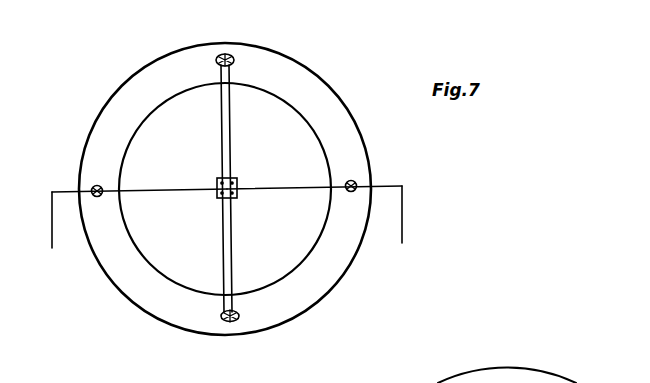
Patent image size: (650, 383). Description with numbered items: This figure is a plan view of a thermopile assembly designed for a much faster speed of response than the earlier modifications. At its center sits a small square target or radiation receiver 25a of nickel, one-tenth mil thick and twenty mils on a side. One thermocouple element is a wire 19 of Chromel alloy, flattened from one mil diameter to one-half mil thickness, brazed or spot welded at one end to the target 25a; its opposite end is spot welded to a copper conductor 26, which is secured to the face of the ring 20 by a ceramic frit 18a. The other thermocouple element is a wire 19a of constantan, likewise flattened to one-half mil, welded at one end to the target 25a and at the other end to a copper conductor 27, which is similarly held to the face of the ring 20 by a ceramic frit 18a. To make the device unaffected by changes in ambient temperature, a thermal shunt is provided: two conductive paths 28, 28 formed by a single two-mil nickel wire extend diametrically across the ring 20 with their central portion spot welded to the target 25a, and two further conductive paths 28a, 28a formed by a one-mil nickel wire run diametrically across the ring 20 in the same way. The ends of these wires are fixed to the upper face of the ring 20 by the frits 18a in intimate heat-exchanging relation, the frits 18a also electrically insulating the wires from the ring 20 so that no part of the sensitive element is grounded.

The ceramic frit 18a is at (233, 58).
The wire 19 is at (183, 190).
The wire 19a is at (299, 189).
The ring 20 is at (348, 125).
The target 25a is at (237, 180).
The copper conductor 26 is at (50, 233).
The copper conductor 27 is at (403, 233).
The conductive paths 28 is at (221, 133).
The conductive paths 28a is at (231, 138).